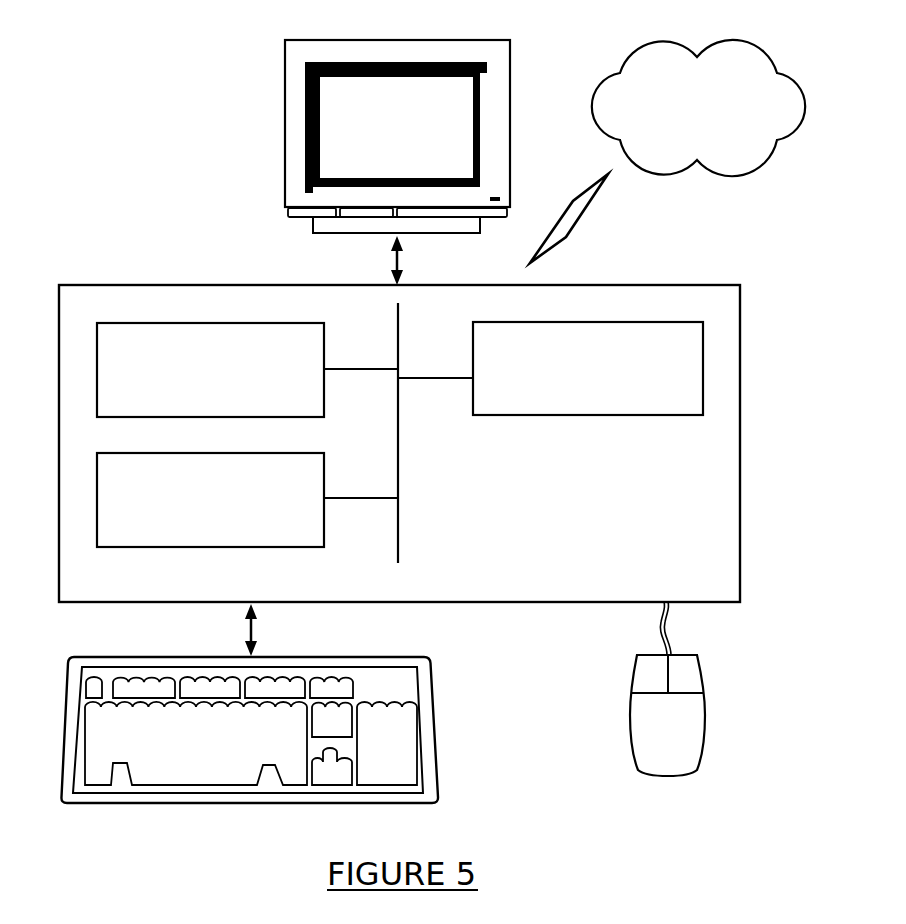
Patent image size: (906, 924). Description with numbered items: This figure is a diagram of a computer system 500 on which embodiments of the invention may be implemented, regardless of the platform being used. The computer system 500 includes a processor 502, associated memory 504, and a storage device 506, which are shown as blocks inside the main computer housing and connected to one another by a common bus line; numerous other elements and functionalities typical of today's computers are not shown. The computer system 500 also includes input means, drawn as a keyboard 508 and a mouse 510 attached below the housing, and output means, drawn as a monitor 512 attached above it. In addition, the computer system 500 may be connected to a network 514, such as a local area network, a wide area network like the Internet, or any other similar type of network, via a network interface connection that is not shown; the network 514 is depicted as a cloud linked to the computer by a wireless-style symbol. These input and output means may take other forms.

The computer system 500 is at (764, 277).
The processor 502 is at (610, 381).
The memory 504 is at (233, 383).
The storage device 506 is at (233, 513).
The keyboard 508 is at (216, 758).
The mouse 510 is at (688, 740).
The monitor 512 is at (419, 141).
The network 514 is at (720, 121).